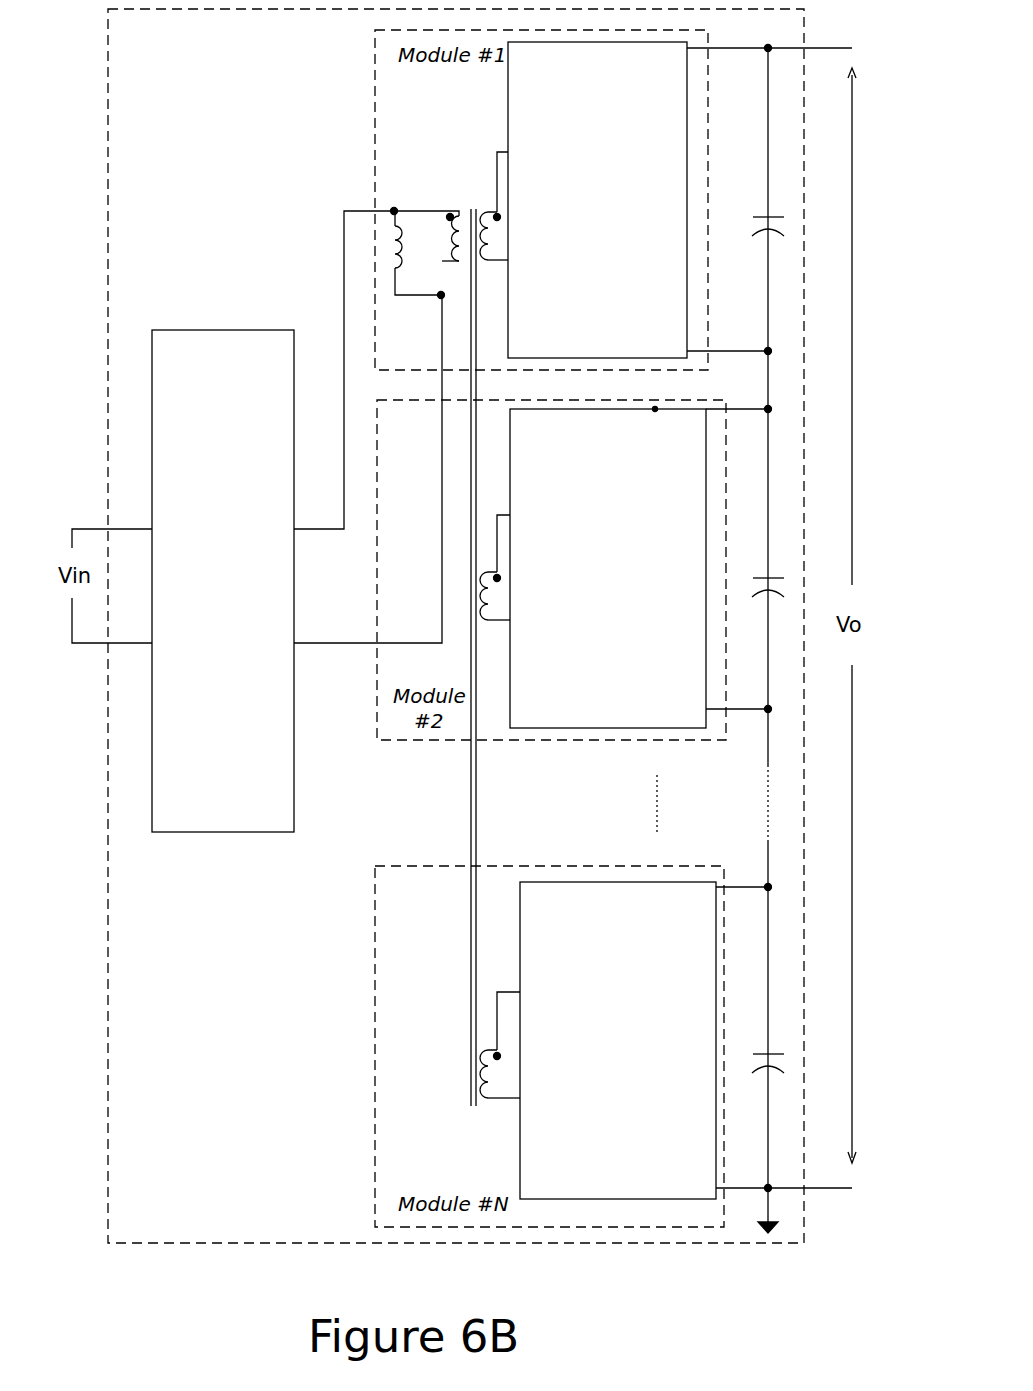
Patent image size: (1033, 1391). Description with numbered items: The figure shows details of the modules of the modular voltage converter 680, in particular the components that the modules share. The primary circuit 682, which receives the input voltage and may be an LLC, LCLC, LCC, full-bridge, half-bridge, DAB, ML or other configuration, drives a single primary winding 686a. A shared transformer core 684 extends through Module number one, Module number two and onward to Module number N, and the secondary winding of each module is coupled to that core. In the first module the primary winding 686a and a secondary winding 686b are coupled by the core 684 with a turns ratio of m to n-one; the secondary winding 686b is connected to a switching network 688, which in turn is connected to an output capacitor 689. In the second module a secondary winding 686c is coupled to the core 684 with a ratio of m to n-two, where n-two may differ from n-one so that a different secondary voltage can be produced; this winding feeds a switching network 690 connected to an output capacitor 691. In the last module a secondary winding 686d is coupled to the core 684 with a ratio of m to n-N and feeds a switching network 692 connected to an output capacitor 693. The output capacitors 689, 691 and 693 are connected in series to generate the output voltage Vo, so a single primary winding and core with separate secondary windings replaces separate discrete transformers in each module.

The modular voltage converter 680 is at (108, 38).
The primary circuit 682 is at (240, 330).
The core 684 is at (473, 840).
The primary winding 686a is at (426, 193).
The secondary winding 686b is at (472, 193).
The secondary winding 686c is at (487, 650).
The secondary winding 686d is at (499, 1115).
The switching network 688 is at (666, 200).
The output capacitor 689 is at (760, 202).
The switching network 690 is at (641, 567).
The output capacitor 691 is at (760, 562).
The switching network 692 is at (686, 1040).
The output capacitor 693 is at (760, 1041).